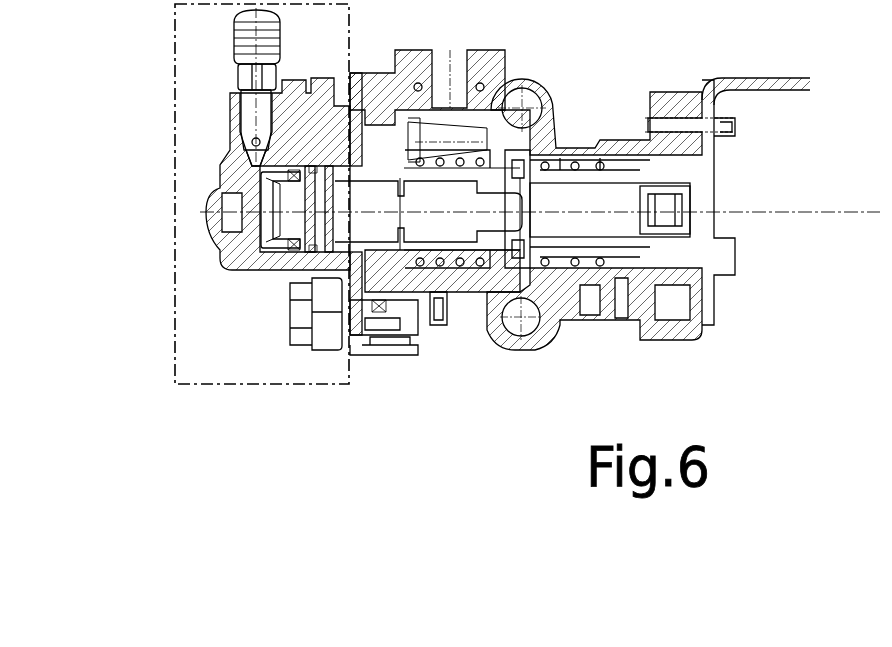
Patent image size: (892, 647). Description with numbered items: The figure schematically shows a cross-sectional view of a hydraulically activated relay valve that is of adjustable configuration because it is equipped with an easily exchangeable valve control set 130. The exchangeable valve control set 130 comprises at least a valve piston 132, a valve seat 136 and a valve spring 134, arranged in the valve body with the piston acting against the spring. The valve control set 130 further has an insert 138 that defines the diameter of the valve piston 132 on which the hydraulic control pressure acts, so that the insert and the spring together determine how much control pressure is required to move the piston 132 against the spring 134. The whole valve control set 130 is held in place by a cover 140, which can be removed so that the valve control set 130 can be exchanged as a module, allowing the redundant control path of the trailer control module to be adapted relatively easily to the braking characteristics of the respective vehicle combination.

The exchangeable valve control set 130 is at (176, 193).
The valve piston 132 is at (395, 255).
The valve spring 134 is at (473, 293).
The valve seat 136 is at (517, 243).
The insert 138 is at (373, 305).
The cover 140 is at (242, 252).